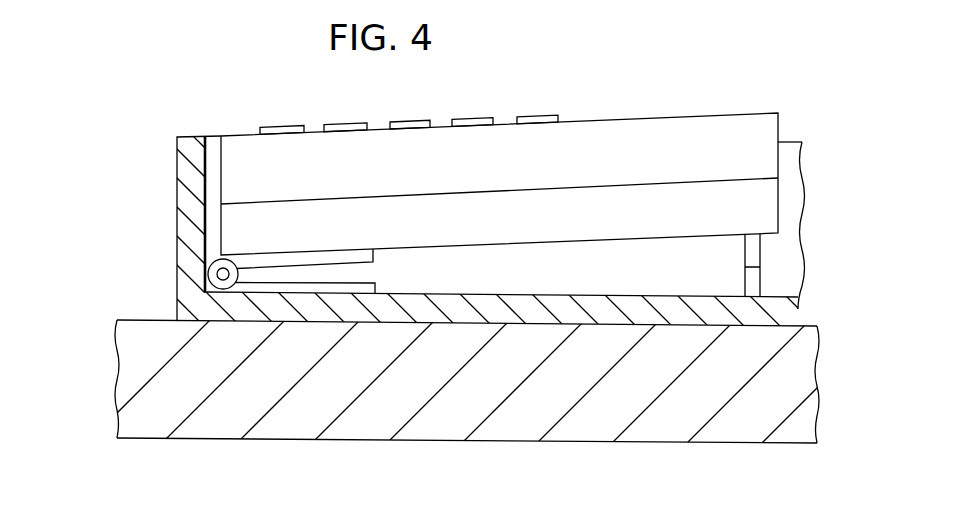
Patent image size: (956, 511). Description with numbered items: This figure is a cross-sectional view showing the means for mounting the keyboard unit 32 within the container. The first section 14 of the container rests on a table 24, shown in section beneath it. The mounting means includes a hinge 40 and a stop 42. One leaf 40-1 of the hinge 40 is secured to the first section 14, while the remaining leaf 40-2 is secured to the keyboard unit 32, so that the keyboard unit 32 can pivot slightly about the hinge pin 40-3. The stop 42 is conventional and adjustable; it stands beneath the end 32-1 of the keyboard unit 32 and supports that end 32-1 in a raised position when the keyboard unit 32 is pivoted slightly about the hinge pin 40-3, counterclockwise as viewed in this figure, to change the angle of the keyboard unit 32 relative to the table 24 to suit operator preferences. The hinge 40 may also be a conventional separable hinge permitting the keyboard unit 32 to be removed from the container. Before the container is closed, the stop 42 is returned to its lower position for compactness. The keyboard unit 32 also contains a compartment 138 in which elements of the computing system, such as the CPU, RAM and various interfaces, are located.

The first section 14 is at (188, 181).
The table 24 is at (530, 428).
The keyboard unit 32 is at (462, 165).
The end of the keyboard unit 32-1 is at (712, 128).
The compartment 138 is at (268, 222).
The hinge 40 is at (292, 363).
The leaf of the hinge 40-1 is at (305, 290).
The remaining leaf of the hinge 40-2 is at (374, 257).
The hinge pin 40-3 is at (217, 273).
The stop 42 is at (750, 252).